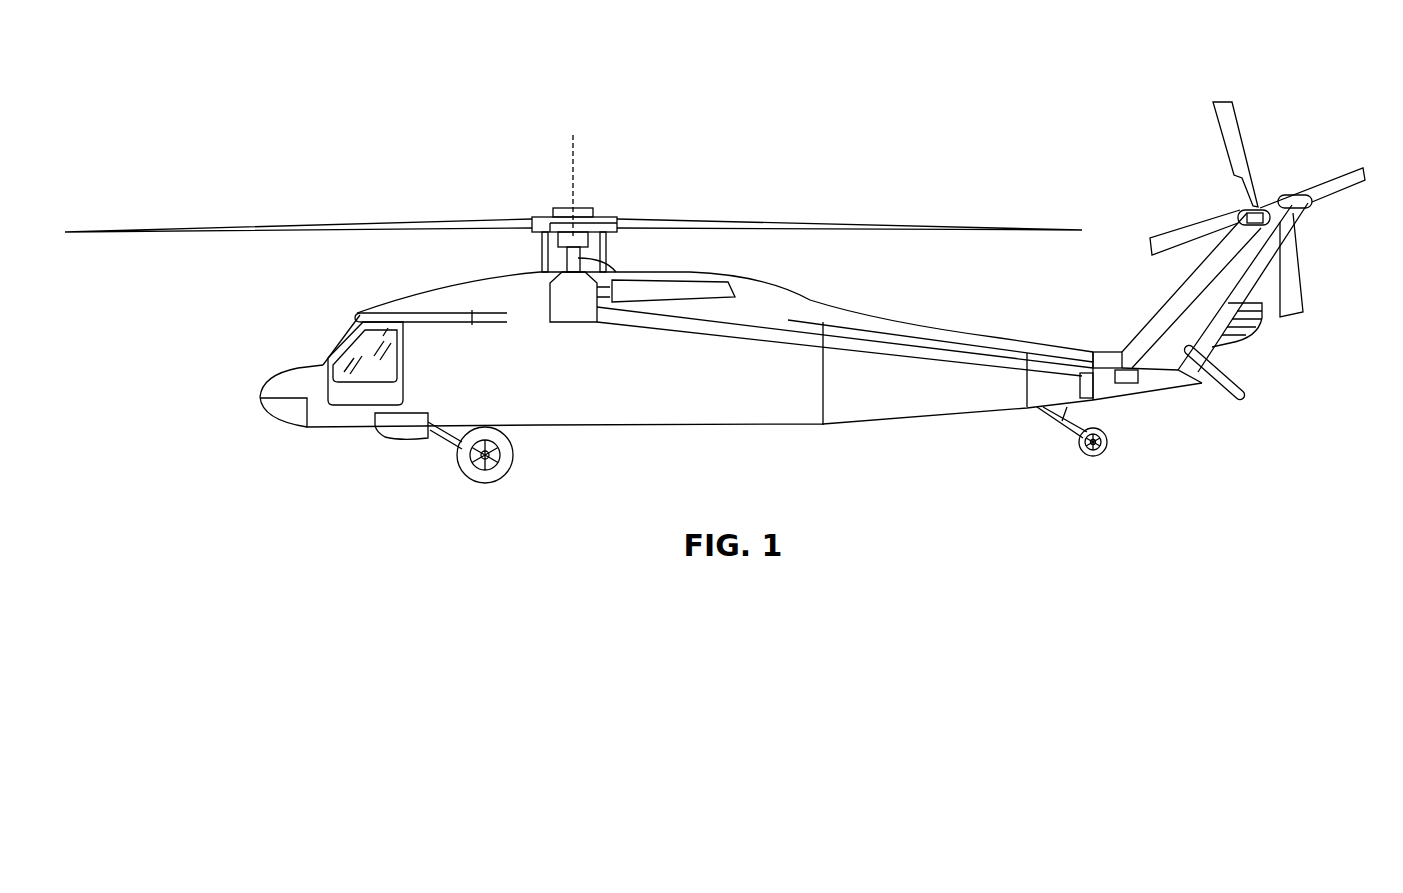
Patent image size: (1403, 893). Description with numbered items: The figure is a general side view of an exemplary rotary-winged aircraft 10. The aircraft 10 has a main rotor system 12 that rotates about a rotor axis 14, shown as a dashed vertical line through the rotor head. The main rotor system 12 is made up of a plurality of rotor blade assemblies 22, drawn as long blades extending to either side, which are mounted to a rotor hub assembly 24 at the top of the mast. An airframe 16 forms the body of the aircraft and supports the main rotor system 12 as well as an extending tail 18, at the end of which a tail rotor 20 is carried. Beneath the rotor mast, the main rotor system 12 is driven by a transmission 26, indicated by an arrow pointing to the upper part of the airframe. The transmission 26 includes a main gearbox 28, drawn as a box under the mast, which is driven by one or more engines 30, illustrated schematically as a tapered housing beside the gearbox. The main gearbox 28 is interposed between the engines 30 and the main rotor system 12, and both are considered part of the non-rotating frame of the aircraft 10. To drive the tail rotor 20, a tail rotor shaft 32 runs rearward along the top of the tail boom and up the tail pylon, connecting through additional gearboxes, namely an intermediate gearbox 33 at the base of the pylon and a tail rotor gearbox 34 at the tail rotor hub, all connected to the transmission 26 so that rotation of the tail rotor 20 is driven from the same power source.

The rotary-winged aircraft 10 is at (327, 80).
The main rotor system 12 is at (535, 217).
The rotor axis 14 is at (575, 153).
The airframe 16 is at (588, 412).
The extending tail 18 is at (1013, 403).
The tail rotor 20 is at (1242, 125).
The rotor blade assemblies 22 is at (298, 223).
The rotor hub assembly 24 is at (548, 212).
The transmission 26 is at (520, 289).
The main gearbox 28 is at (577, 303).
The engines 30 is at (682, 278).
The tail rotor shaft 32 is at (793, 343).
The intermediate gearbox 33 is at (1120, 380).
The tail rotor gearbox 34 is at (1267, 223).